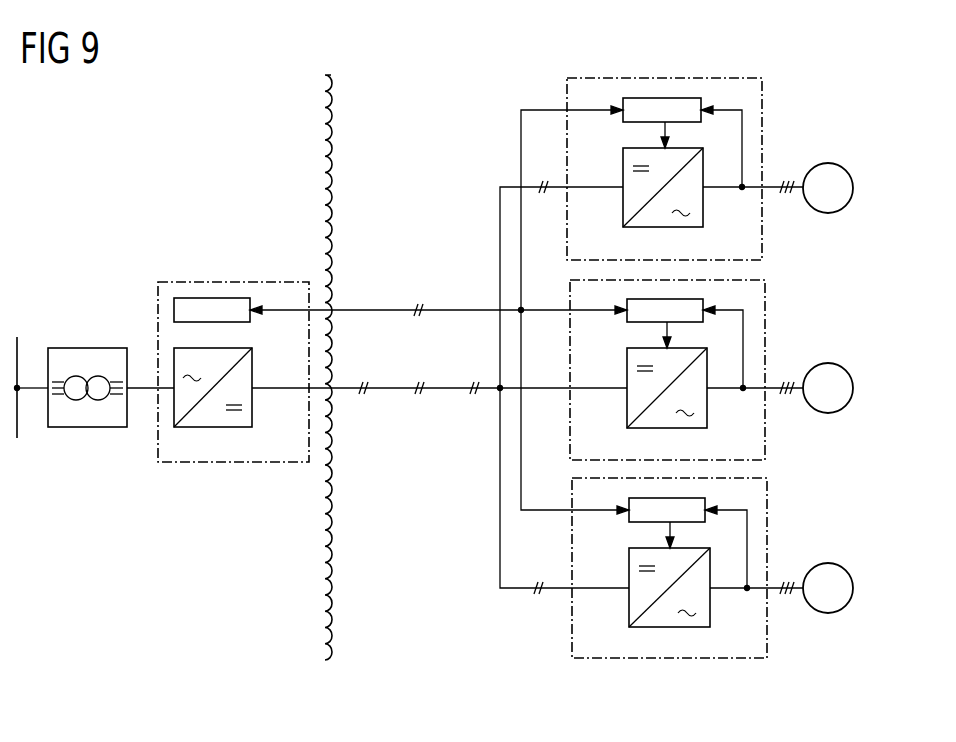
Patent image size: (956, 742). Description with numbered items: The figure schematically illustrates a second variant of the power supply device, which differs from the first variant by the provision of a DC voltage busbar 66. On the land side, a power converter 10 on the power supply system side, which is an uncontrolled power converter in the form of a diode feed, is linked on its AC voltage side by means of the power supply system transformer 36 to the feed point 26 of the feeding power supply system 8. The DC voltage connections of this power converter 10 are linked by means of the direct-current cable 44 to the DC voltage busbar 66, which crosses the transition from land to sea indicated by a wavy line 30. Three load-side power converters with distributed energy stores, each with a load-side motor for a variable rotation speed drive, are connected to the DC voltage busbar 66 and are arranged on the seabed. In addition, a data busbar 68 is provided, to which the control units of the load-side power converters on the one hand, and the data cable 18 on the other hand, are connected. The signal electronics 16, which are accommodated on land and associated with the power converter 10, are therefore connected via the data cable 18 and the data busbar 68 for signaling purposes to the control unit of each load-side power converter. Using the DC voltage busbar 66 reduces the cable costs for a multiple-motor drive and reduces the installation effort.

The feeding power supply system 8 is at (18, 345).
The power converter on the power supply system side 10 is at (213, 427).
The signal electronics 16 is at (212, 298).
The data cable 18 is at (445, 310).
The feed point 26 is at (18, 392).
The wavy line 30 is at (333, 513).
The power supply system transformer 36 is at (88, 348).
The direct-current cable 44 is at (447, 388).
The DC voltage busbar 66 is at (500, 196).
The data busbar 68 is at (521, 130).